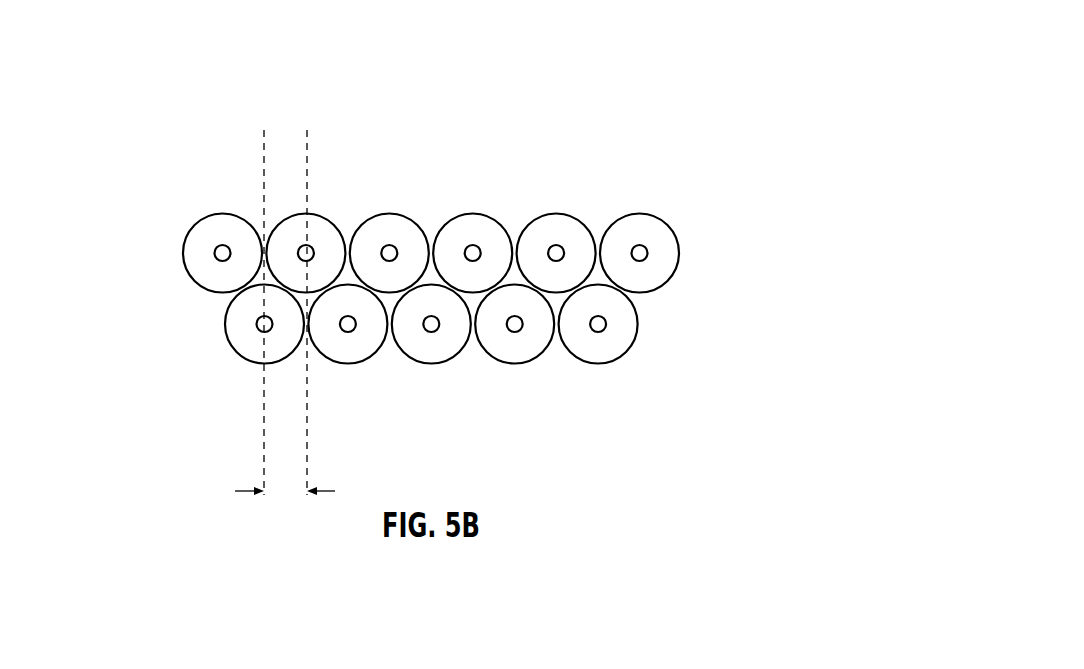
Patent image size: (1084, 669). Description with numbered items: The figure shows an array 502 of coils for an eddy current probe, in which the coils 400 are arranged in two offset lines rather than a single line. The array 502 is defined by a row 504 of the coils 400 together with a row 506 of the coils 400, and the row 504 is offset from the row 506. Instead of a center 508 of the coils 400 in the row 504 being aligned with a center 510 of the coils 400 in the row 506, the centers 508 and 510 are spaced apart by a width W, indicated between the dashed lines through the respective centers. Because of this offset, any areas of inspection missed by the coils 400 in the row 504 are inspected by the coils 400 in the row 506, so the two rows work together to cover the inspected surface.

The array 502 is at (708, 56).
The coil 400 is at (183, 254).
The row 506 is at (660, 205).
The row 504 is at (660, 358).
The center 510 is at (290, 250).
The center 508 is at (248, 324).
The width W is at (327, 491).